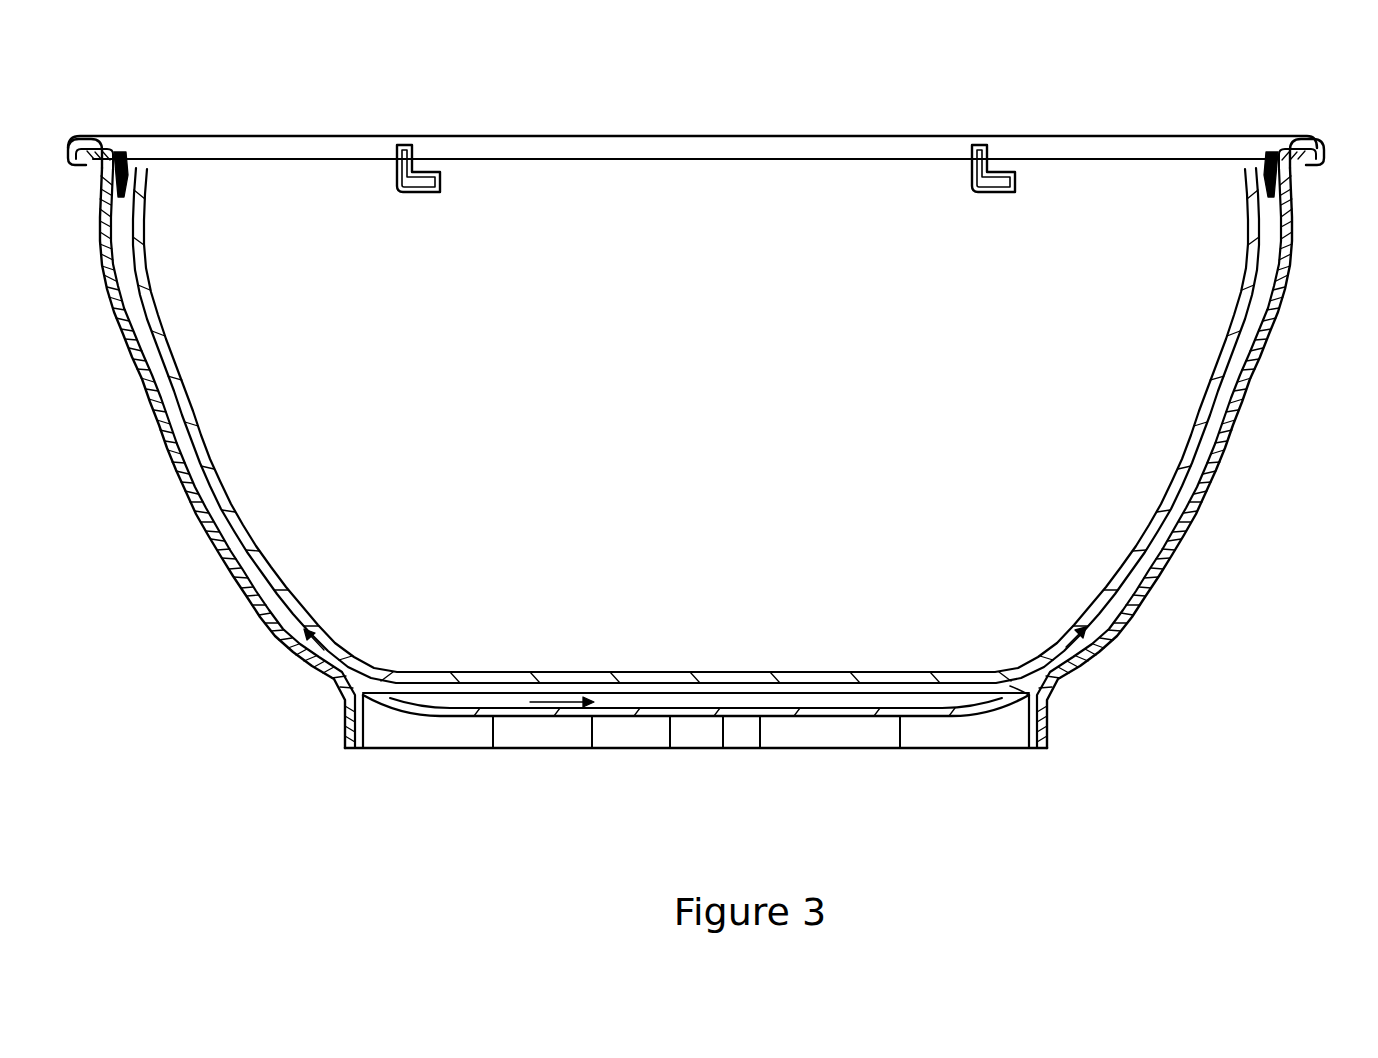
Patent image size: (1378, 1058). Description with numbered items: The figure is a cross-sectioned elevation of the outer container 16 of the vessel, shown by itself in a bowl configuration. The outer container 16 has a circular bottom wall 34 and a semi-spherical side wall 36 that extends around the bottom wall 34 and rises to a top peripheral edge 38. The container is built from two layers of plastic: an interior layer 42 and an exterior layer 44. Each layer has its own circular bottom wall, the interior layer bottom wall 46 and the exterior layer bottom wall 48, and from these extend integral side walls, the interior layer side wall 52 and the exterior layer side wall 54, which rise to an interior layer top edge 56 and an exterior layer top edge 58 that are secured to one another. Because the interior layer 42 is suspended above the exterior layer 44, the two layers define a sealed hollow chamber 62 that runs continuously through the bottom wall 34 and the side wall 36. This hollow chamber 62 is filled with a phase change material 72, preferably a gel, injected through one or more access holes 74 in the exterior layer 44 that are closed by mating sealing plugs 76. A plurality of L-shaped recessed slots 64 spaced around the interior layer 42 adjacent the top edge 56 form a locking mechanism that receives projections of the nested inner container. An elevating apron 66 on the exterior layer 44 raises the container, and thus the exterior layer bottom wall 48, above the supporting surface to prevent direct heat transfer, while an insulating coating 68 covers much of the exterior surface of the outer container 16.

The outer container 16 is at (268, 637).
The bottom wall 34 is at (752, 713).
The side wall 36 is at (1128, 610).
The top peripheral edge 38 is at (1104, 136).
The interior layer 42 is at (1246, 305).
The exterior layer 44 is at (1258, 347).
The interior layer bottom wall 46 is at (820, 717).
The exterior layer bottom wall 48 is at (930, 693).
The interior layer side wall 52 is at (1210, 418).
The exterior layer side wall 54 is at (1196, 488).
The interior layer top edge 56 is at (1325, 144).
The exterior layer top edge 58 is at (1322, 160).
The hollow chamber 62 is at (341, 677).
The L-shaped recessed slots 64 is at (118, 152).
The elevating apron 66 is at (397, 735).
The insulating coating 68 is at (168, 462).
The phase change material 72 is at (148, 352).
The access holes 74 is at (672, 714).
The sealing plugs 76 is at (691, 712).